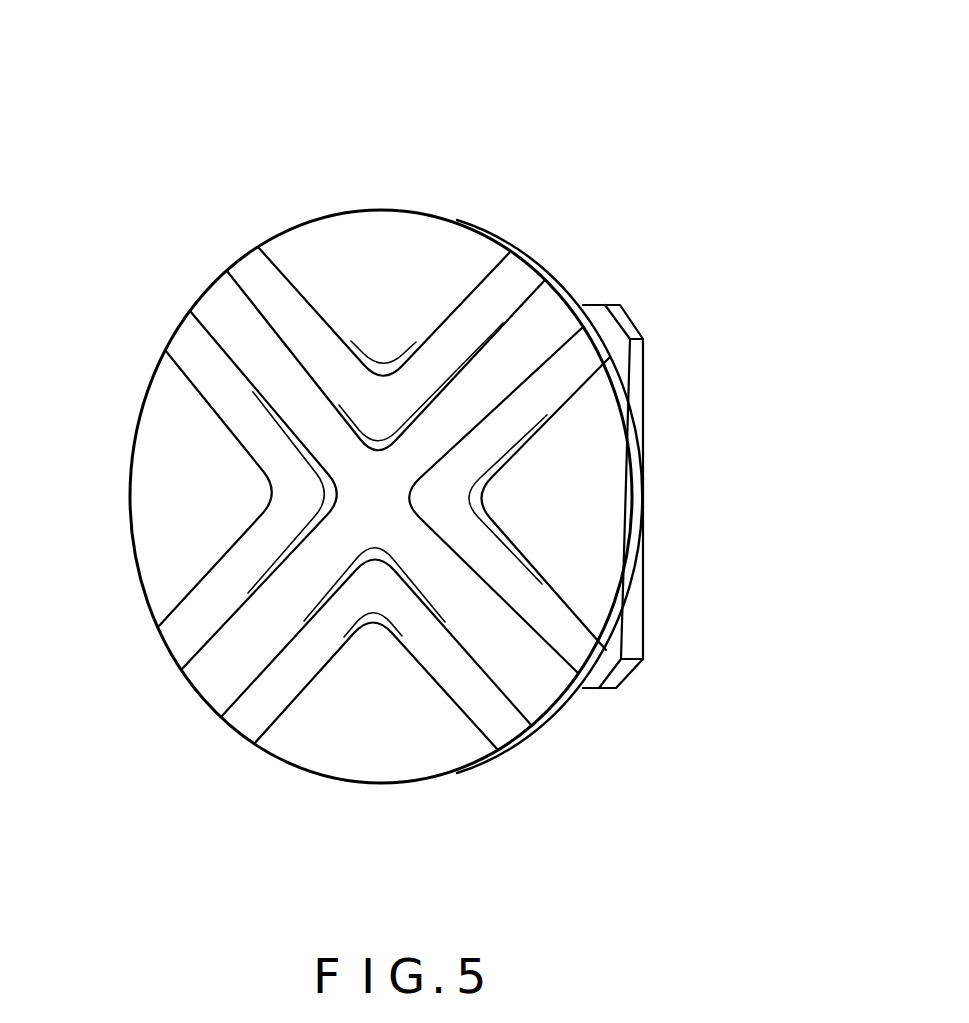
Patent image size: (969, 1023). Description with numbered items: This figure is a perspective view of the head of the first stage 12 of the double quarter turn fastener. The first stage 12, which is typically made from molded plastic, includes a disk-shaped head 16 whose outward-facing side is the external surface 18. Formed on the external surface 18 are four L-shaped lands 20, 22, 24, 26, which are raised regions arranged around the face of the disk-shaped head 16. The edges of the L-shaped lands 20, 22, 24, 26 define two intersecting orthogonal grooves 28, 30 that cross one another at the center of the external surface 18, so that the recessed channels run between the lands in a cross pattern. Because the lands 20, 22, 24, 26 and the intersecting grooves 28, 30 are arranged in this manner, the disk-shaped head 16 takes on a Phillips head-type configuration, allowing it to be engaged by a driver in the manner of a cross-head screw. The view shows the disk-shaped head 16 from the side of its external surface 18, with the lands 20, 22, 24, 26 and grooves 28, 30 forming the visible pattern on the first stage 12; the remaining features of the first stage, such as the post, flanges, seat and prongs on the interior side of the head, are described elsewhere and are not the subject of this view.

The first stage 12 is at (715, 298).
The disk-shaped head 16 is at (464, 224).
The external surface 18 is at (373, 248).
The L-shaped land 20 is at (280, 290).
The L-shaped land 22 is at (540, 412).
The L-shaped land 24 is at (502, 720).
The L-shaped land 26 is at (208, 599).
The orthogonal groove 28 is at (217, 308).
The orthogonal groove 30 is at (543, 328).